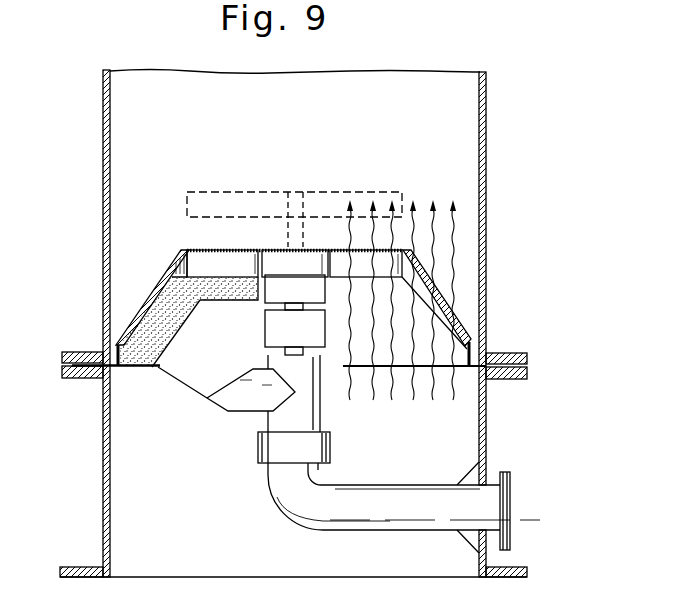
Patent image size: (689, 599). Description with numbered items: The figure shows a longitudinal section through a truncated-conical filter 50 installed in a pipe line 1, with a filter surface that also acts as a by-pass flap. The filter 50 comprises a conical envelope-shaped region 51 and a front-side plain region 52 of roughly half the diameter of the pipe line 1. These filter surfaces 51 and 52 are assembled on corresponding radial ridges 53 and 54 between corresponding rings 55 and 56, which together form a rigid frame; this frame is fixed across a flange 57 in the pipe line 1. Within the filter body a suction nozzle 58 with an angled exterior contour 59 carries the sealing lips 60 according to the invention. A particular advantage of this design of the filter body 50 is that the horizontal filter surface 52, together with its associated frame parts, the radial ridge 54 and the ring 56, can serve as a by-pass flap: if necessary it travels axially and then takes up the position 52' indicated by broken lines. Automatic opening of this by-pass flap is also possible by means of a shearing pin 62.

The pipe line 1 is at (486, 124).
The truncated-conical filter 50 is at (340, 242).
The conical envelope-shaped region 51 is at (143, 311).
The front-side plain region 52 is at (294, 249).
The by-pass flap position 52' is at (294, 177).
The radial ridge 53 is at (162, 290).
The radial ridge 54 is at (205, 249).
The ring 55 is at (110, 343).
The ring 56 is at (180, 260).
The flange 57 is at (92, 380).
The suction nozzle 58 is at (197, 378).
The angled exterior contour 59 is at (185, 323).
The sealing lips 60 is at (150, 370).
The shearing pin 62 is at (288, 228).